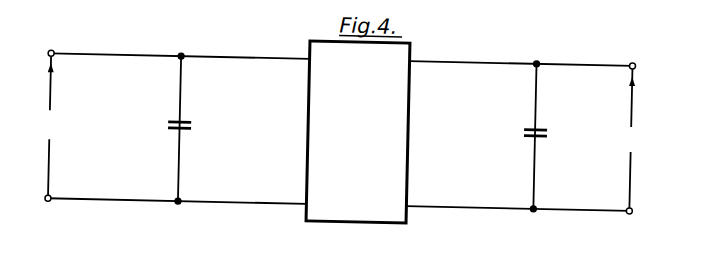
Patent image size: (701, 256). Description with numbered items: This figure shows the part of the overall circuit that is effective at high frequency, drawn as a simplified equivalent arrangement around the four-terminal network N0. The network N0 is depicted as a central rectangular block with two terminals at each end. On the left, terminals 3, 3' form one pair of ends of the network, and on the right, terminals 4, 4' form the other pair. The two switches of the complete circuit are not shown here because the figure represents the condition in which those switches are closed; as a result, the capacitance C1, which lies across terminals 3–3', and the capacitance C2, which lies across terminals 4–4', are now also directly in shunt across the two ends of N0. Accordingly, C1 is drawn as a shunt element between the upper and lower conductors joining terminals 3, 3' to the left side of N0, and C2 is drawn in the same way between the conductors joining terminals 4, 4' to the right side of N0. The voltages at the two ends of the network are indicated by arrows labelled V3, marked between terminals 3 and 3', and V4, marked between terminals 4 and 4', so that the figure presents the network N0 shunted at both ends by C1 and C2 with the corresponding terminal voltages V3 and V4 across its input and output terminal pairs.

The terminal 3 is at (55, 43).
The terminal 3' is at (51, 210).
The terminal 4 is at (632, 54).
The terminal 4' is at (627, 224).
The input voltage V3 is at (57, 125).
The output voltage V4 is at (631, 138).
The capacitance C1 is at (190, 129).
The capacitance C2 is at (546, 137).
The 4-terminal network N0 is at (358, 132).